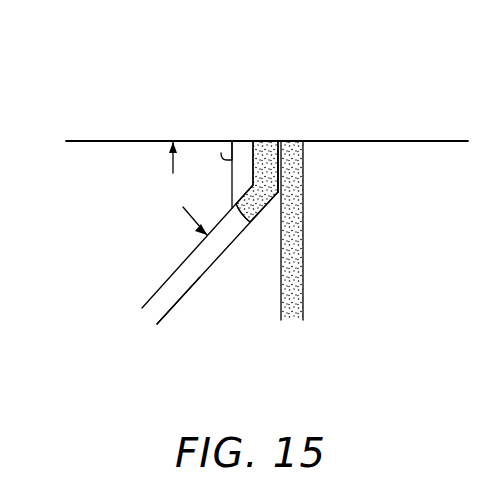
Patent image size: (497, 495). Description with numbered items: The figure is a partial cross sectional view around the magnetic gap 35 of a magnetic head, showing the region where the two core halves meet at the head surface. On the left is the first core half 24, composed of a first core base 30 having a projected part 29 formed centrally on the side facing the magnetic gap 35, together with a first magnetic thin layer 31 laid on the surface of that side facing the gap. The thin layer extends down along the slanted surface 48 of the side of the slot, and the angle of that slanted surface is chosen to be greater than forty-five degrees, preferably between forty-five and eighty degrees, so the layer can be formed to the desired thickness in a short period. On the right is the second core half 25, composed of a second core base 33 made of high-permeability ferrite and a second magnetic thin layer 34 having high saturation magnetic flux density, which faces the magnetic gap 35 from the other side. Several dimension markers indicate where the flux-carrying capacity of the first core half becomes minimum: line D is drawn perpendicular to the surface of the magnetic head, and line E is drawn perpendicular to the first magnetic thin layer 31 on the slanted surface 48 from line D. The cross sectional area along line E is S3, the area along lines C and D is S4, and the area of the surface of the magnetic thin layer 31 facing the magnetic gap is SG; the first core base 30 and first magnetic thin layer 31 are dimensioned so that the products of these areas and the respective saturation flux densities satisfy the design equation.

The first core half 24 is at (179, 128).
The second core half 25 is at (358, 123).
The projected part 29 is at (244, 148).
The first core base 30 is at (137, 156).
The first magnetic thin layer 31 is at (172, 288).
The second core base 33 is at (418, 157).
The second magnetic thin layer 34 is at (293, 141).
The magnetic gap 35 is at (280, 181).
The slanted surface 48 is at (178, 270).
The line D is at (221, 153).
The line E is at (240, 287).
The area of the surface of the magnetic thin layer facing the magnetic gap SG is at (282, 157).
The cross sectional area taken along line E S3 is at (236, 212).
The cross sectional area taken along lines C and D S4 is at (227, 180).